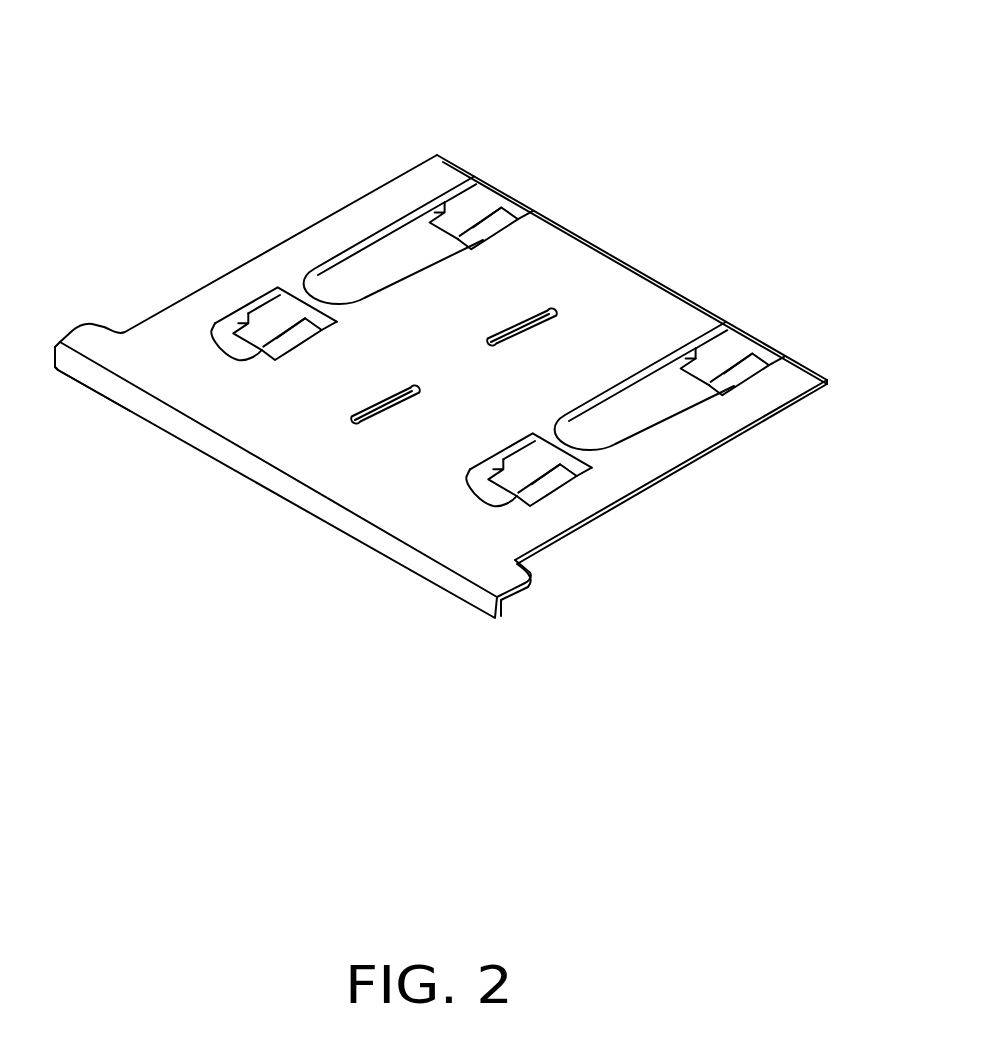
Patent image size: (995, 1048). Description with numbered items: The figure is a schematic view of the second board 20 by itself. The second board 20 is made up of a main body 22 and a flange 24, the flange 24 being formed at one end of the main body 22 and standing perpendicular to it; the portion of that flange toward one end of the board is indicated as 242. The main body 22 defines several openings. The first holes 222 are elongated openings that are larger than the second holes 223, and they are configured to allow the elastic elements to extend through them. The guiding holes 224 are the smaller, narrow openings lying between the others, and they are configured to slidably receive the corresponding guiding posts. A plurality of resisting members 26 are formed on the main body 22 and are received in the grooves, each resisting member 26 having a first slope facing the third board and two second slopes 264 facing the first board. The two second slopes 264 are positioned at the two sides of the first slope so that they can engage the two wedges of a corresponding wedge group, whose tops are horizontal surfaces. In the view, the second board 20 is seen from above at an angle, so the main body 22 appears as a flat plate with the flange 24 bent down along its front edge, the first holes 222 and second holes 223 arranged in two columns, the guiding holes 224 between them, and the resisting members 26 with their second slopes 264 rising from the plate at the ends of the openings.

The second board 20 is at (226, 94).
The main body 22 is at (543, 238).
The first hole 222 is at (647, 412).
The second hole 223 is at (535, 498).
The guiding hole 224 is at (507, 343).
The flange 24 is at (487, 592).
The end portion of front flange 242 is at (123, 393).
The resisting member 26 is at (717, 365).
The second slope 264 is at (700, 347).